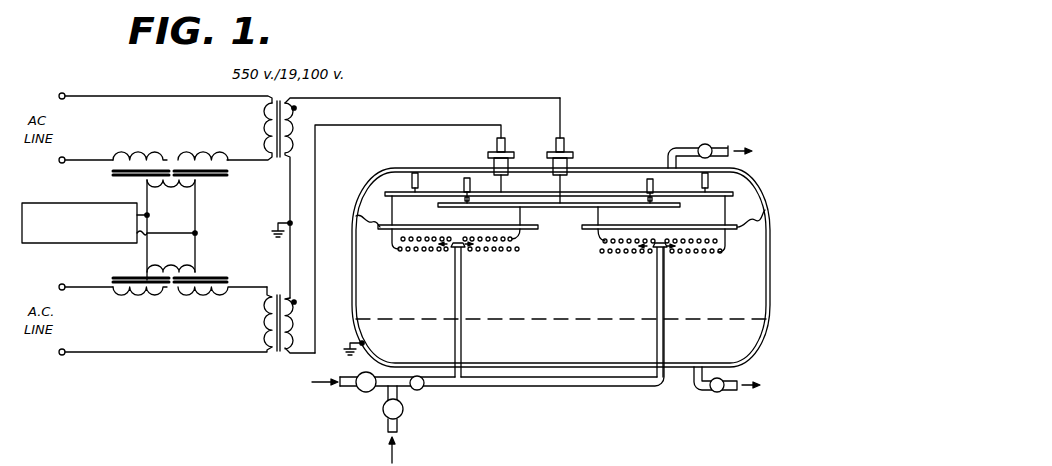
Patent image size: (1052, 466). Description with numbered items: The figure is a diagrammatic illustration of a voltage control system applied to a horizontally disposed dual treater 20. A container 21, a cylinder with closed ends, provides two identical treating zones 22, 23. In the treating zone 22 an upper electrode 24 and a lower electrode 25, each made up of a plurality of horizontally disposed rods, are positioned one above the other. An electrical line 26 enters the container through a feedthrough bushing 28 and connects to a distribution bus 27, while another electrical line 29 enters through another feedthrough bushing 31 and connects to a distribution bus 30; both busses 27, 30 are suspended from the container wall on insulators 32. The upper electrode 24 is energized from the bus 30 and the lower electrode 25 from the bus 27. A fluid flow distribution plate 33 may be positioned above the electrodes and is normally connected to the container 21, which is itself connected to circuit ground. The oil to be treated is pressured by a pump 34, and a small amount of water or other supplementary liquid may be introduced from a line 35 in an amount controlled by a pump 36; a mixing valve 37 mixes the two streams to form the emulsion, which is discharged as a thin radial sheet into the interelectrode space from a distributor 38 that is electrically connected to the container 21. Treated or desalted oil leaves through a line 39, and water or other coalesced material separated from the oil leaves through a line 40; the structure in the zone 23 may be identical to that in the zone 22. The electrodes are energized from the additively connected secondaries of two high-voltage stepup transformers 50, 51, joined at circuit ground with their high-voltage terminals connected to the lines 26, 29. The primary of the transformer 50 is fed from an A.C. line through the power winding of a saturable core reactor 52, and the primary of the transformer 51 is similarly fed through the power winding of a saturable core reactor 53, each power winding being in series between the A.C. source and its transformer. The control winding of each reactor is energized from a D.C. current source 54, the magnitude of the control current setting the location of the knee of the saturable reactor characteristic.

The dual treater 20 is at (631, 135).
The container 21 is at (538, 378).
The treating zone 22 is at (411, 309).
The treating zone 23 is at (727, 309).
The upper electrode 24 is at (513, 241).
The lower electrode 25 is at (501, 253).
The electrical line 26 is at (440, 125).
The distribution bus 27 is at (430, 192).
The feedthrough bushing 28 is at (504, 148).
The electrical line 29 is at (517, 78).
The distribution bus 30 is at (578, 207).
The feedthrough bushing 31 is at (570, 151).
The insulators 32 is at (411, 176).
The fluid flow distribution plate 33 is at (381, 229).
The pump 34 is at (358, 391).
The line 35 is at (386, 429).
The pump 36 is at (402, 415).
The mixing valve 37 is at (419, 391).
The distributor 38 is at (456, 249).
The line 39 is at (718, 146).
The line 40 is at (720, 391).
The stepup transformer 50 is at (273, 160).
The stepup transformer 51 is at (275, 290).
The saturable core reactor 52 is at (172, 166).
The saturable core reactor 53 is at (172, 286).
The D.C. current source 54 is at (73, 244).